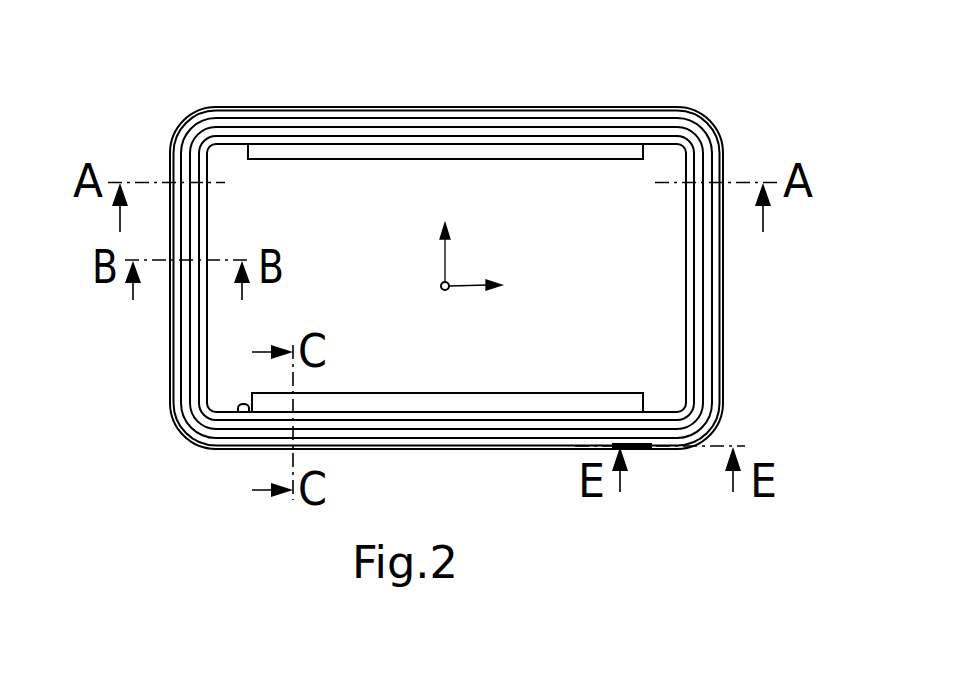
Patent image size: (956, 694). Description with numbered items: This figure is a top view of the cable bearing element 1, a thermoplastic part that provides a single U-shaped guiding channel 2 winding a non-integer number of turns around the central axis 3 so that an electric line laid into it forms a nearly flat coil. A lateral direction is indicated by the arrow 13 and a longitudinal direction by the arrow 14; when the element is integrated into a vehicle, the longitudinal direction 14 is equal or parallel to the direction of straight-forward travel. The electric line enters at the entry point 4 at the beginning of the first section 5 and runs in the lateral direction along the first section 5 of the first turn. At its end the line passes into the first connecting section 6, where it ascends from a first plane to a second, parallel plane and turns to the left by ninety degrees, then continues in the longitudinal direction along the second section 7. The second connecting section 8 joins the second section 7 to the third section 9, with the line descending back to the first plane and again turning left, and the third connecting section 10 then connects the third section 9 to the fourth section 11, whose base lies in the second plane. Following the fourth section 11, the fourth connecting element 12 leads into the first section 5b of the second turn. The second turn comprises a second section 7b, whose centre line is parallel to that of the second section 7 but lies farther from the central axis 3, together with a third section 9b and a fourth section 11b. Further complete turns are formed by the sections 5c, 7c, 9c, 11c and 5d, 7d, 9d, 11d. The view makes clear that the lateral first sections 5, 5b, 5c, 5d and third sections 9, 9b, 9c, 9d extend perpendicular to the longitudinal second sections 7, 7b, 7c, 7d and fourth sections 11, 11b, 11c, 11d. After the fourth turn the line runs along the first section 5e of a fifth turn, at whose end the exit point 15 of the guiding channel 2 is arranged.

The cable bearing element 1 is at (115, 410).
The guiding channel 2 is at (367, 411).
The central axis 3 is at (448, 283).
The entry point 4 is at (246, 406).
The first section 5 is at (417, 411).
The first section of second turn 5b is at (442, 421).
The first section of third turn 5c is at (487, 430).
The first section of fourth turn 5d is at (498, 438).
The first section of fifth turn 5e is at (573, 447).
The first connecting section 6 is at (715, 432).
The second section 7 is at (693, 282).
The second section of second turn 7b is at (700, 287).
The second section of third turn 7c is at (710, 305).
The second section of fourth turn 7d is at (718, 332).
The second connecting section 8 is at (717, 123).
The third section 9 is at (508, 140).
The third section of second turn 9b is at (600, 132).
The third section of third turn 9c is at (632, 122).
The third section of fourth turn 9d is at (607, 115).
The third connecting section 10 is at (188, 113).
The fourth section 11 is at (200, 248).
The fourth section of second turn 11b is at (195, 334).
The fourth section of third turn 11c is at (183, 358).
The fourth section of fourth turn 11d is at (175, 390).
The fourth connecting element 12 is at (185, 447).
The arrow indicating lateral direction 13 is at (452, 288).
The arrow indicating longitudinal direction 14 is at (442, 258).
The exit point 15 is at (652, 447).